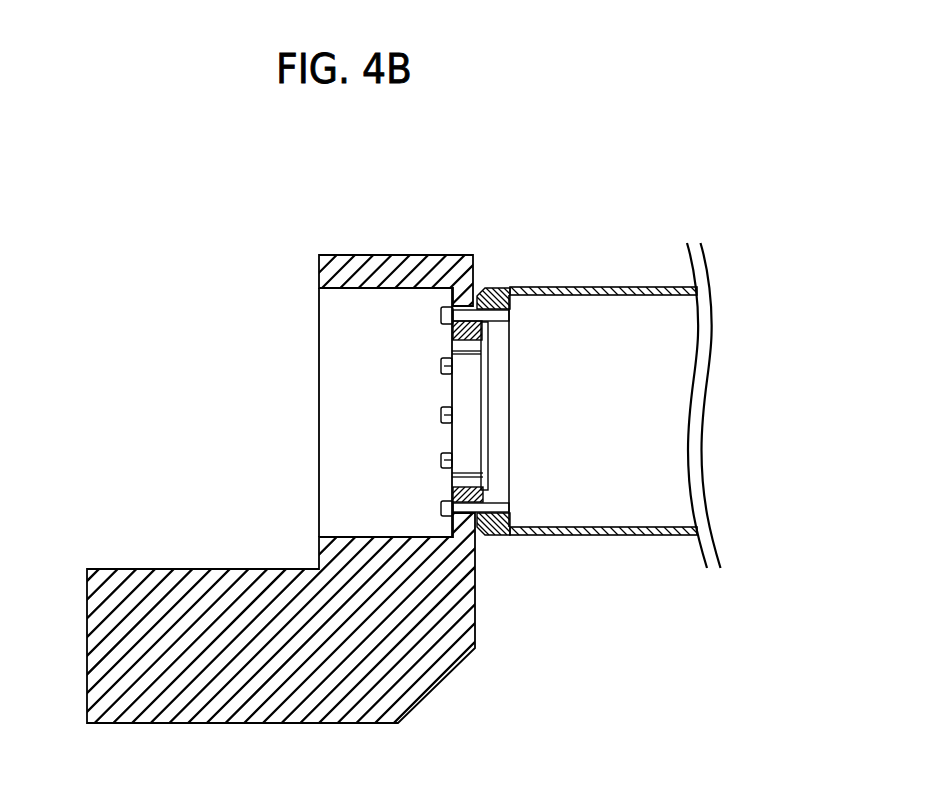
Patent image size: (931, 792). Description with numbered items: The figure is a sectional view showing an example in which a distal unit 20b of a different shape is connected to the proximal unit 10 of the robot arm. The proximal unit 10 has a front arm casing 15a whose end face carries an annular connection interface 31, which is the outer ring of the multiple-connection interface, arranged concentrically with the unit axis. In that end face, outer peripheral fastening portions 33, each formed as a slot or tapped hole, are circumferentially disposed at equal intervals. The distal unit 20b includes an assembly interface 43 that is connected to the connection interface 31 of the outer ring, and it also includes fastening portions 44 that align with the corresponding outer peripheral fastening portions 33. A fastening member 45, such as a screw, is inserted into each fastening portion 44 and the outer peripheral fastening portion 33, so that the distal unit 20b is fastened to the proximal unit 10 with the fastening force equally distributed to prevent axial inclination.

The proximal unit 10 is at (380, 242).
The front arm casing 15a is at (319, 274).
The distal unit 20b is at (563, 243).
The connection interface 31 is at (508, 303).
The outer peripheral fastening portions 33 is at (455, 340).
The assembly interface 43 is at (452, 301).
The fastening portions 44 is at (510, 509).
The fastening member 45 is at (446, 508).